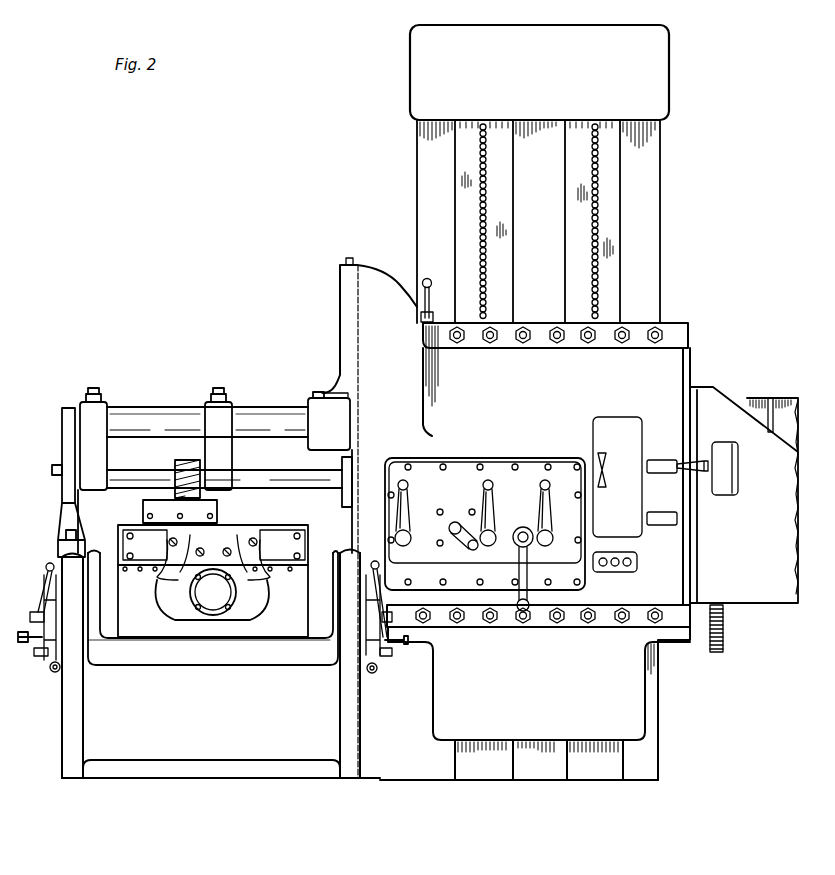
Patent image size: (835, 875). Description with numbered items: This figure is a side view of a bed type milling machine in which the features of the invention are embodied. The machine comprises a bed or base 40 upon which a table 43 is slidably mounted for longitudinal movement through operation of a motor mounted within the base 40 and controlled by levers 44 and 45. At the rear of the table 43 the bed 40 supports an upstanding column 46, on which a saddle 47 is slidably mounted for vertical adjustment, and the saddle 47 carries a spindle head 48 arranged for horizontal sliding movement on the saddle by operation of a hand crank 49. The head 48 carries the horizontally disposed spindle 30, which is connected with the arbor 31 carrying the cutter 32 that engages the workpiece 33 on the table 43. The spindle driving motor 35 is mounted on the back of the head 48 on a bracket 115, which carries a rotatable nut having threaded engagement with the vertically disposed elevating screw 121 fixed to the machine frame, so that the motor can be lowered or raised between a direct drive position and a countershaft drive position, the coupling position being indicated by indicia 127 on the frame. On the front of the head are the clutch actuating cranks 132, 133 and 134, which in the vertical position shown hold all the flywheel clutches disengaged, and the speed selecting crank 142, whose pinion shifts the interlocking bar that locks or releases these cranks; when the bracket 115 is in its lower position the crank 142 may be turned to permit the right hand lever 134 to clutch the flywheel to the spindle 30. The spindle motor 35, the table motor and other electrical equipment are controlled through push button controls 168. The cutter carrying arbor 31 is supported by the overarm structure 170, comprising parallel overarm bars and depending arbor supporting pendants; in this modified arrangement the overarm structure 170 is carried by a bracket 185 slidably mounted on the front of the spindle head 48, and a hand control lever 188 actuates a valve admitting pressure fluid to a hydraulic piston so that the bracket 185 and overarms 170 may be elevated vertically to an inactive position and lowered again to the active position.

The spindle 30 is at (345, 503).
The arbor 31 is at (286, 470).
The cutter 32 is at (176, 470).
The workpiece 33 is at (143, 505).
The spindle driving motor 35 is at (787, 398).
The bed or base 40 is at (193, 745).
The table 43 is at (283, 537).
The lever 44 is at (385, 680).
The lever 45 is at (49, 681).
The column 46 is at (656, 70).
The saddle 47 is at (680, 625).
The spindle head 48 is at (663, 377).
The hand crank 49 is at (530, 608).
The bracket 115 is at (774, 601).
The elevating screw 121 is at (724, 633).
The indicia 127 is at (652, 474).
The clutch actuating crank 132 is at (402, 480).
The clutch actuating crank 133 is at (483, 487).
The clutch actuating crank 134 is at (540, 487).
The speed selecting crank 142 is at (468, 548).
The push button controls 168 is at (612, 573).
The overarm structure 170 is at (172, 407).
The bracket 185 is at (348, 333).
The hand control lever 188 is at (432, 280).